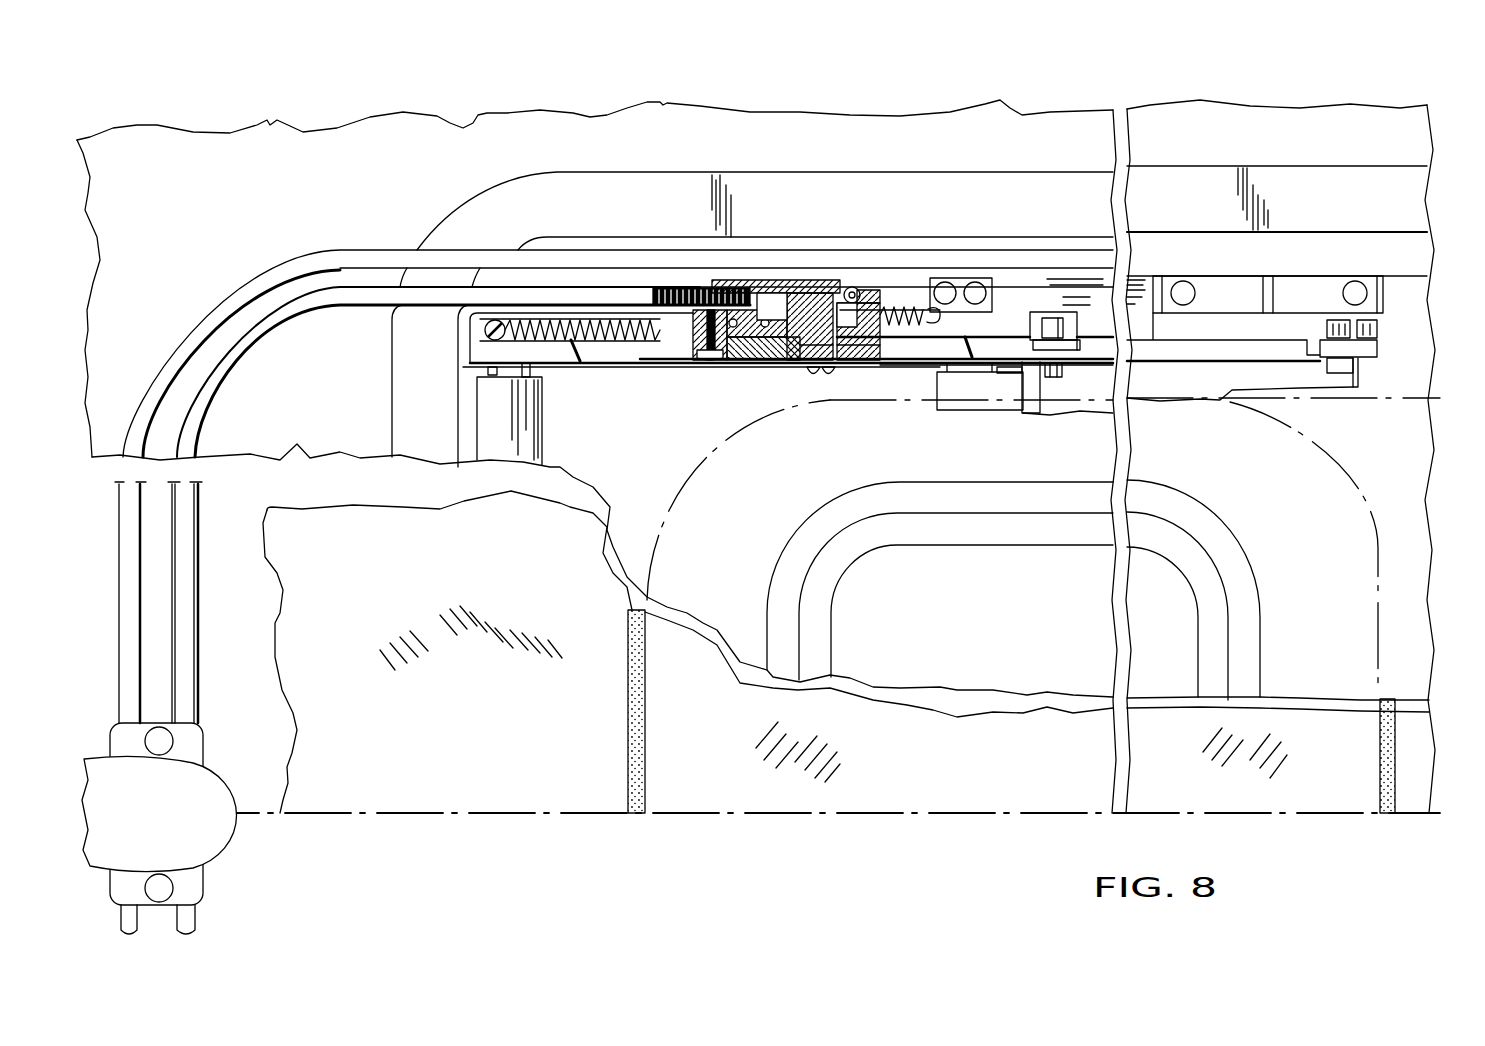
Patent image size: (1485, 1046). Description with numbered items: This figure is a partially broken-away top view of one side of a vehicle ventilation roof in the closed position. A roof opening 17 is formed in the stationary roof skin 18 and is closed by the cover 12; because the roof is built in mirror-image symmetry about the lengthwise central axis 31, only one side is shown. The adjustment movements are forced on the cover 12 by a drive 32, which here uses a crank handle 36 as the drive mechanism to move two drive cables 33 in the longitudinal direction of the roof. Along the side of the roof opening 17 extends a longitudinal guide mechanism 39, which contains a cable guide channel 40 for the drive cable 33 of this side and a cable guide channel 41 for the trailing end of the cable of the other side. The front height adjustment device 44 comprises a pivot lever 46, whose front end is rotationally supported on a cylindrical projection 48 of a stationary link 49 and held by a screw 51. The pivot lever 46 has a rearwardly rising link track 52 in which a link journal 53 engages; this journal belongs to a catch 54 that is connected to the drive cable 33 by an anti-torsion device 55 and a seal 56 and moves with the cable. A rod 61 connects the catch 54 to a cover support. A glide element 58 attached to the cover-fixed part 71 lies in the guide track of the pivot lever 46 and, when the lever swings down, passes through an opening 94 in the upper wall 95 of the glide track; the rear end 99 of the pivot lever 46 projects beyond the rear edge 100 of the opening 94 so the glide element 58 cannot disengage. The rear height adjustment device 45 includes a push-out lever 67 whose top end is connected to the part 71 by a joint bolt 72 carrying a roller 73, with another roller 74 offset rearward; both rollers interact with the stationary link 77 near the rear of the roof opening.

The drive cable 33 is at (677, 292).
The anti-torsion device 55 is at (765, 293).
The catch 54 is at (797, 293).
The seal 56 is at (852, 287).
The cable guide channel 40 is at (867, 297).
The cable guide channel 41 is at (947, 253).
The opening 94 is at (1037, 320).
The upper wall 95 is at (1053, 297).
The rear edge 100 is at (1078, 328).
The longitudinal guide mechanism 39 is at (1137, 299).
The link 77 is at (1212, 324).
The roller 73 is at (1337, 322).
The roller 74 is at (1366, 322).
The push-out lever 67 is at (1373, 344).
The rear height adjustment device 45 is at (1382, 372).
The joint bolt 72 is at (1342, 377).
The part fixed to the cover 71 is at (1289, 375).
The cover 12 is at (945, 767).
The link 49 is at (613, 350).
The cylindrical projection 48 is at (686, 352).
The screw 51 is at (715, 358).
The pivot lever 46 is at (770, 352).
The link journal 53 is at (803, 352).
The link track 52 is at (855, 350).
The front height adjustment device 44 is at (900, 385).
The rod 61 is at (840, 333).
The glide element 58 is at (1040, 413).
The rear end 99 is at (1070, 410).
The crank handle 36 is at (106, 781).
The drive 32 is at (240, 839).
The roof opening 17 is at (629, 788).
The lengthwise central axis 31 is at (857, 813).
The stationary roof skin 18 is at (441, 768).